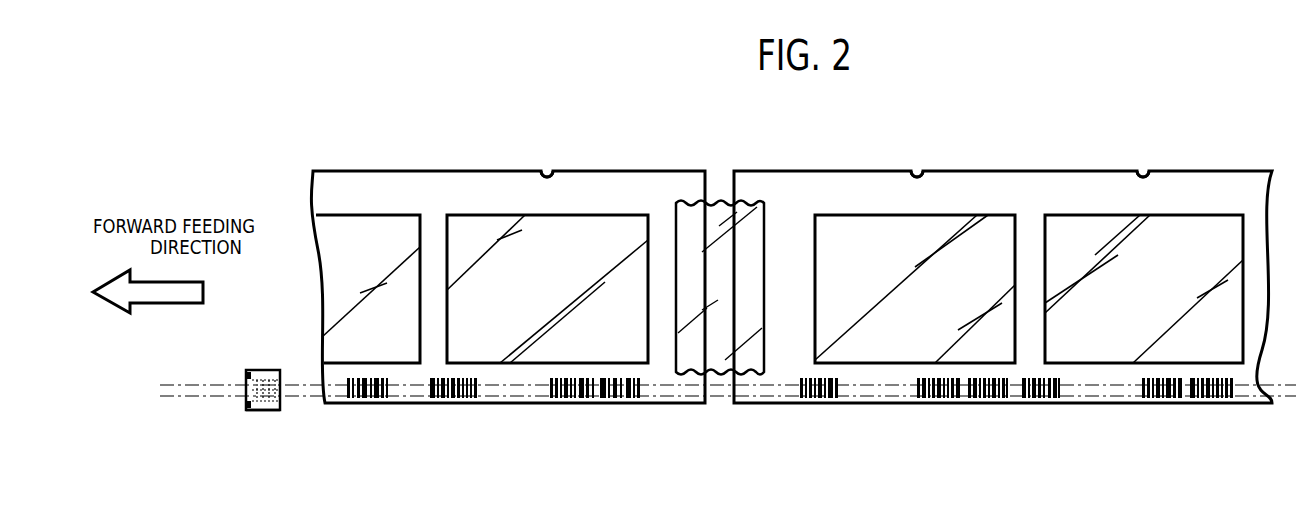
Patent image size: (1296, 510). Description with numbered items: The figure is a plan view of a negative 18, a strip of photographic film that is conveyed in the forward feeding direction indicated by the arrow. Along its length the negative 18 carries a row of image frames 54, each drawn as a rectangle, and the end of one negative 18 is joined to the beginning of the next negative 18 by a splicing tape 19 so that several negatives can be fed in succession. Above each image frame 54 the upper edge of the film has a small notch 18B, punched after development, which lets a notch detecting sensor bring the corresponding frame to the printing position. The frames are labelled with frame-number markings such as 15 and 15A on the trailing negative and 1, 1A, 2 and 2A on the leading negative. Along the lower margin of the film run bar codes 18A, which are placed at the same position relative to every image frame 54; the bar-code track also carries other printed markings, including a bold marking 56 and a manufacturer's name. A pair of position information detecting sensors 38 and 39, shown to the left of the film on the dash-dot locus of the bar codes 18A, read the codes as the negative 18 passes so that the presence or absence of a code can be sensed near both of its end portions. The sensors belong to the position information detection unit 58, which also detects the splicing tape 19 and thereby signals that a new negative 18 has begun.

The negative 18 is at (425, 178).
The bar codes 18A is at (350, 399).
The notches 18B is at (549, 172).
The splicing tape 19 is at (723, 215).
The image frames 54 is at (381, 230).
The frame number mark 56 is at (512, 390).
The position information detecting sensor 39 is at (262, 370).
The position information detecting sensor 38 is at (267, 411).
The position information detection unit 58 is at (249, 371).
The frame number 15 is at (442, 192).
The frame number 15A is at (568, 192).
The frame number 1 is at (815, 192).
The frame number 1A is at (935, 192).
The frame number 2 is at (1043, 192).
The frame number 2A is at (1162, 192).